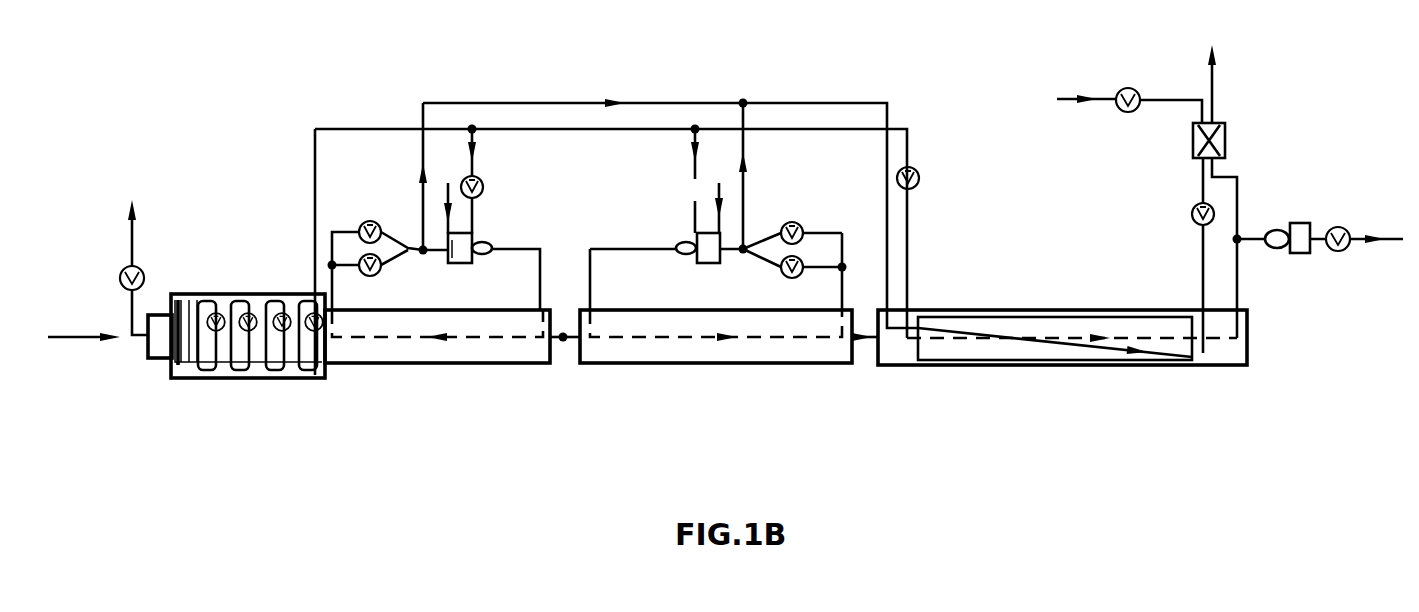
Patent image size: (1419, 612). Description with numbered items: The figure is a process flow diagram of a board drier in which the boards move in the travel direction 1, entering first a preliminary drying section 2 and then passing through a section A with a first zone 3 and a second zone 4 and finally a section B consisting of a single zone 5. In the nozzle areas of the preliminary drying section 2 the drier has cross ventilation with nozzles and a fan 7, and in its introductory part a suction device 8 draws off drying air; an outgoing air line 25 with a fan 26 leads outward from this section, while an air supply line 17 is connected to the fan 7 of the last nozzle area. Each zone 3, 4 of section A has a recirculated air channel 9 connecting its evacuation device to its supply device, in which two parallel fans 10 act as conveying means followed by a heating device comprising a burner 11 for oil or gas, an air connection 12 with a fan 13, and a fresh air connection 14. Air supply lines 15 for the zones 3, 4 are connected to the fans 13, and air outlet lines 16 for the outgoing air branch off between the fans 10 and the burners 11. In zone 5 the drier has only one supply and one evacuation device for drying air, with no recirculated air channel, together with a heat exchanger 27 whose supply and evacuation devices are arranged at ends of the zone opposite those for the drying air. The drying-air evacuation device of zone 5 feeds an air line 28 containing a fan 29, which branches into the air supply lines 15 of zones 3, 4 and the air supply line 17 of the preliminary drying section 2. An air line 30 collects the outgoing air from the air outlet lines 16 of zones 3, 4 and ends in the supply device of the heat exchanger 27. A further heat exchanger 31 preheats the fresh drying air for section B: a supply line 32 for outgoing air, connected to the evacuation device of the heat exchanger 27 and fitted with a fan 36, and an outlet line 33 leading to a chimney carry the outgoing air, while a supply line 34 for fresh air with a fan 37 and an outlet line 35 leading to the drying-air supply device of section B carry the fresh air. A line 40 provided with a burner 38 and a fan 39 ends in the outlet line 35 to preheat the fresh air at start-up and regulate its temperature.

The travel direction 1 is at (83, 340).
The preliminary drying section 2 is at (257, 373).
The first zone 3 is at (466, 350).
The second zone 4 is at (718, 350).
The zone of section B 5 is at (897, 353).
The fan 7 is at (217, 313).
The suction device 8 is at (182, 307).
The recirculated air channel 9 is at (542, 283).
The fans 10 is at (370, 221).
The burner 11 is at (457, 252).
The air connection 12 is at (472, 213).
The fan 13 is at (483, 190).
The fresh air connection 14 is at (448, 185).
The air supply lines 15 is at (480, 150).
The air outlet lines 16 is at (420, 150).
The air supply line 17 is at (313, 170).
The outgoing air line 25 is at (128, 243).
The fan 26 is at (118, 273).
The heat exchanger 27 is at (1043, 350).
The air line 28 is at (578, 128).
The fan 29 is at (920, 178).
The air line 30 is at (825, 102).
The heat exchanger 31 is at (1193, 133).
The supply line for outgoing air 32 is at (1200, 270).
The outlet line for outgoing air 33 is at (1217, 83).
The supply line for fresh air 34 is at (1165, 97).
The outlet line for fresh air 35 is at (1240, 185).
The fan 36 is at (1192, 213).
The fan 37 is at (1126, 88).
The burner 38 is at (1305, 223).
The fan 39 is at (1335, 252).
The line 40 is at (1393, 240).